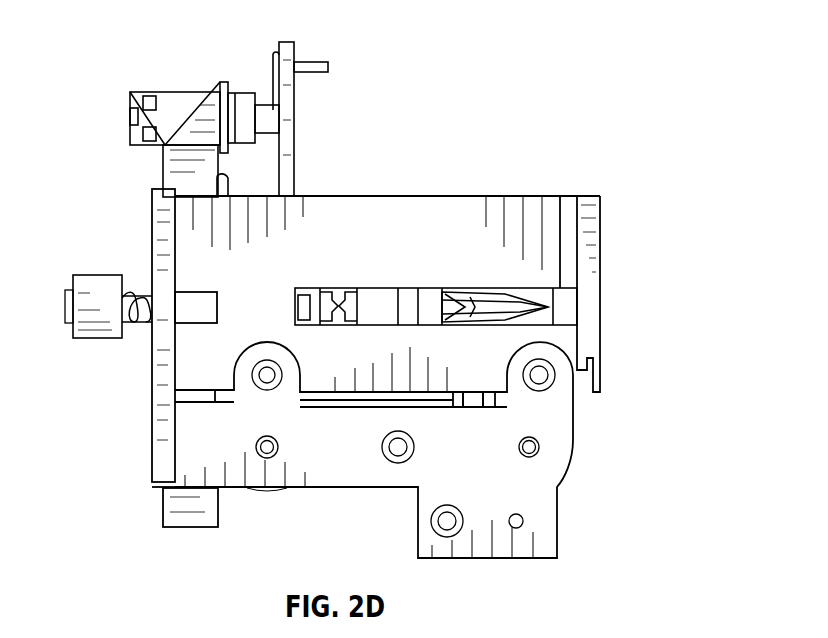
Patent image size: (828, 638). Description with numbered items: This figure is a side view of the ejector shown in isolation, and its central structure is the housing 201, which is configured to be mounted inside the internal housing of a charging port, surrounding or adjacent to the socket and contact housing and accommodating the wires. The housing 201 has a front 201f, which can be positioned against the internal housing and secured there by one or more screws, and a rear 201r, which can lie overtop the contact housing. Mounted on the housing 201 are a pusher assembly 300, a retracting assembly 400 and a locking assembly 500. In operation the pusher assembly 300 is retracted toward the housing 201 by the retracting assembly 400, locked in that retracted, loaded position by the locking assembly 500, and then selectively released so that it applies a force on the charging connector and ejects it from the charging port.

The housing 201 is at (283, 273).
The front of housing 201f is at (152, 407).
The rear of housing 201r is at (613, 290).
The pusher assembly 300 is at (98, 283).
The retracting assembly 400 is at (410, 305).
The locking assembly 500 is at (209, 50).